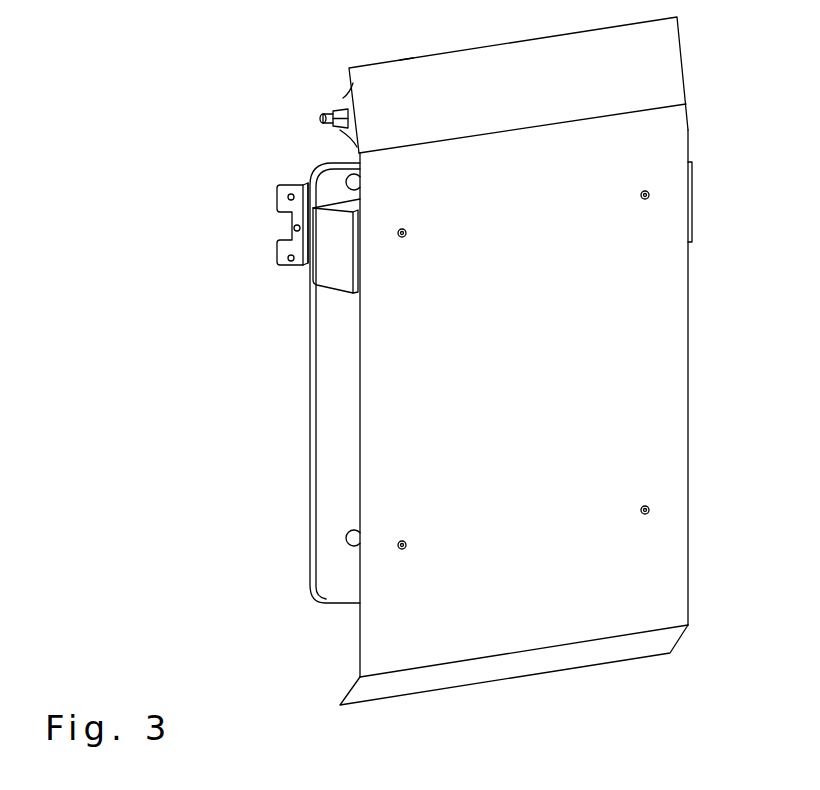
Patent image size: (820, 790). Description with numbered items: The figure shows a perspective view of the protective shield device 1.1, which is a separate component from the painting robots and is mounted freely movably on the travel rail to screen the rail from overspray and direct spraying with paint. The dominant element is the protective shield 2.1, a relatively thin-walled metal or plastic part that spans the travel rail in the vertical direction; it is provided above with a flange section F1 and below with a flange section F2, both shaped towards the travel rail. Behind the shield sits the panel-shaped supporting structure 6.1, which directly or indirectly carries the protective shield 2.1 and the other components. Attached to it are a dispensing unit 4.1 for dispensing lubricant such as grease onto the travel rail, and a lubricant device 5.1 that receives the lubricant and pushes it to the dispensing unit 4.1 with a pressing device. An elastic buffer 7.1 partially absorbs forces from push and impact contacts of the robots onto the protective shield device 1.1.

The protective shield device 1.1 is at (177, 117).
The protective shield 2.1 is at (597, 383).
The dispensing unit 4.1 is at (297, 187).
The lubricant device 5.1 is at (343, 100).
The supporting structure 6.1 is at (330, 462).
The buffer 7.1 is at (330, 265).
The flange section F1 is at (612, 68).
The flange section F2 is at (590, 655).